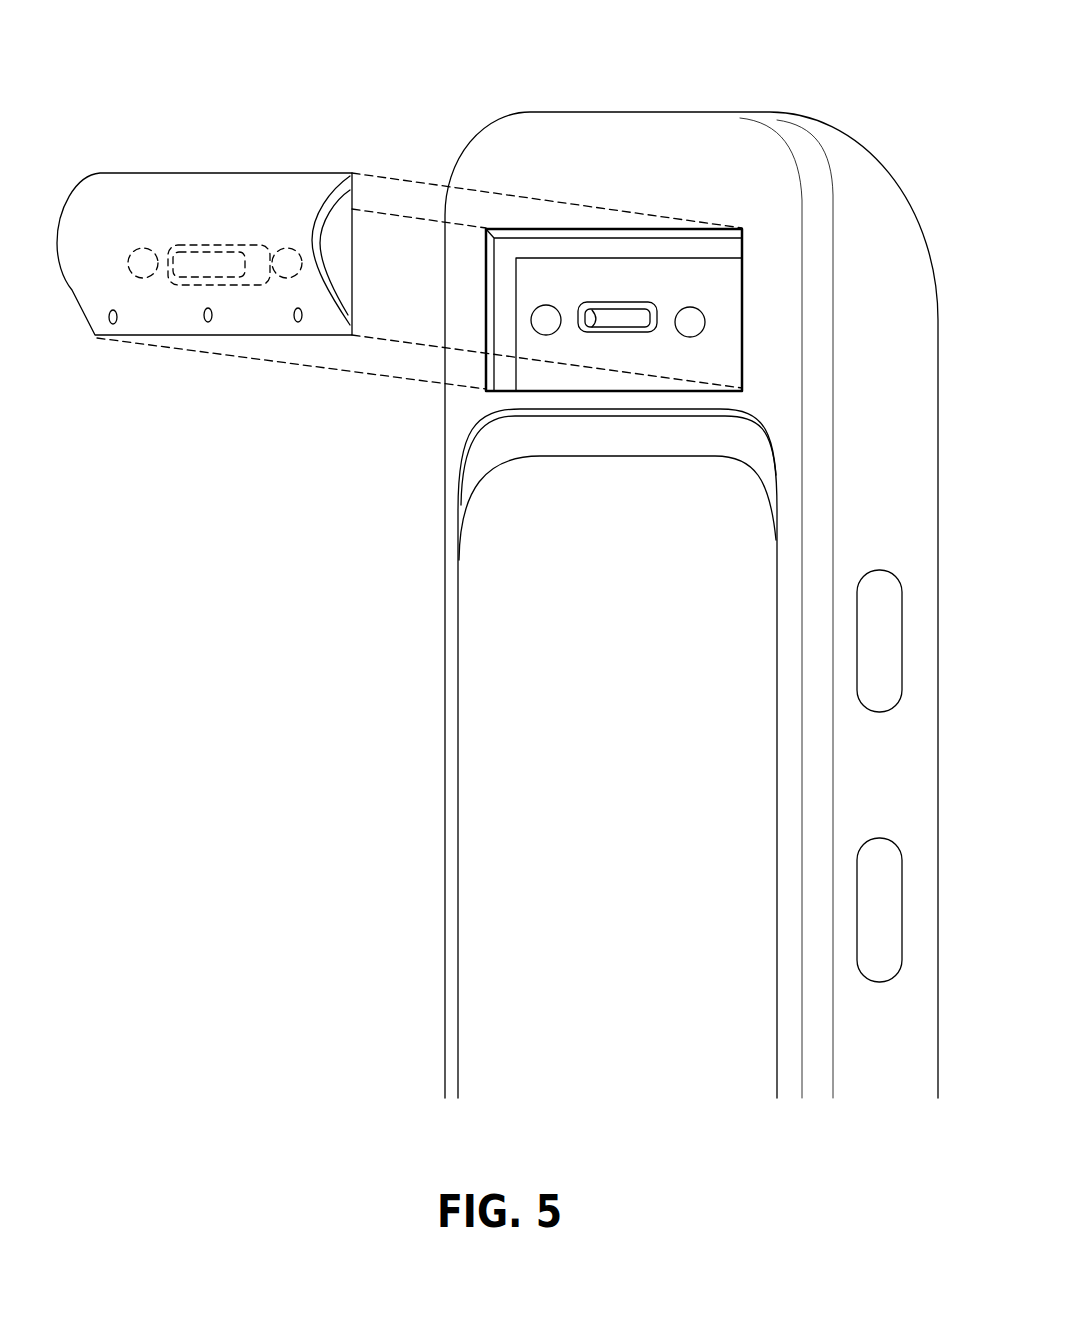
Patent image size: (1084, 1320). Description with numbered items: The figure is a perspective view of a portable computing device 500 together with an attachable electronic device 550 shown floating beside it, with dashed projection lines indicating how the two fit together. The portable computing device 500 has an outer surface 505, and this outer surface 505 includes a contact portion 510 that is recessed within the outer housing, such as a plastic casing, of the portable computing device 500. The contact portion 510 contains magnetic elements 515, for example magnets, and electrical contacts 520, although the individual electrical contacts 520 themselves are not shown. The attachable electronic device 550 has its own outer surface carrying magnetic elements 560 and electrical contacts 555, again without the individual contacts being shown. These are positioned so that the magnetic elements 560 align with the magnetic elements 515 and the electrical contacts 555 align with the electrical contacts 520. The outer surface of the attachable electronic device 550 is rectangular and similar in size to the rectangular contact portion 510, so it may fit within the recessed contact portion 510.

The portable computing device 500 is at (668, 110).
The outer surface 505 is at (565, 867).
The contact portion 510 is at (742, 310).
The magnetic elements 515 is at (548, 300).
The electrical contacts 520 is at (638, 330).
The attachable electronic device 550 is at (100, 173).
The electrical contacts 555 is at (203, 245).
The magnetic elements 560 is at (143, 283).